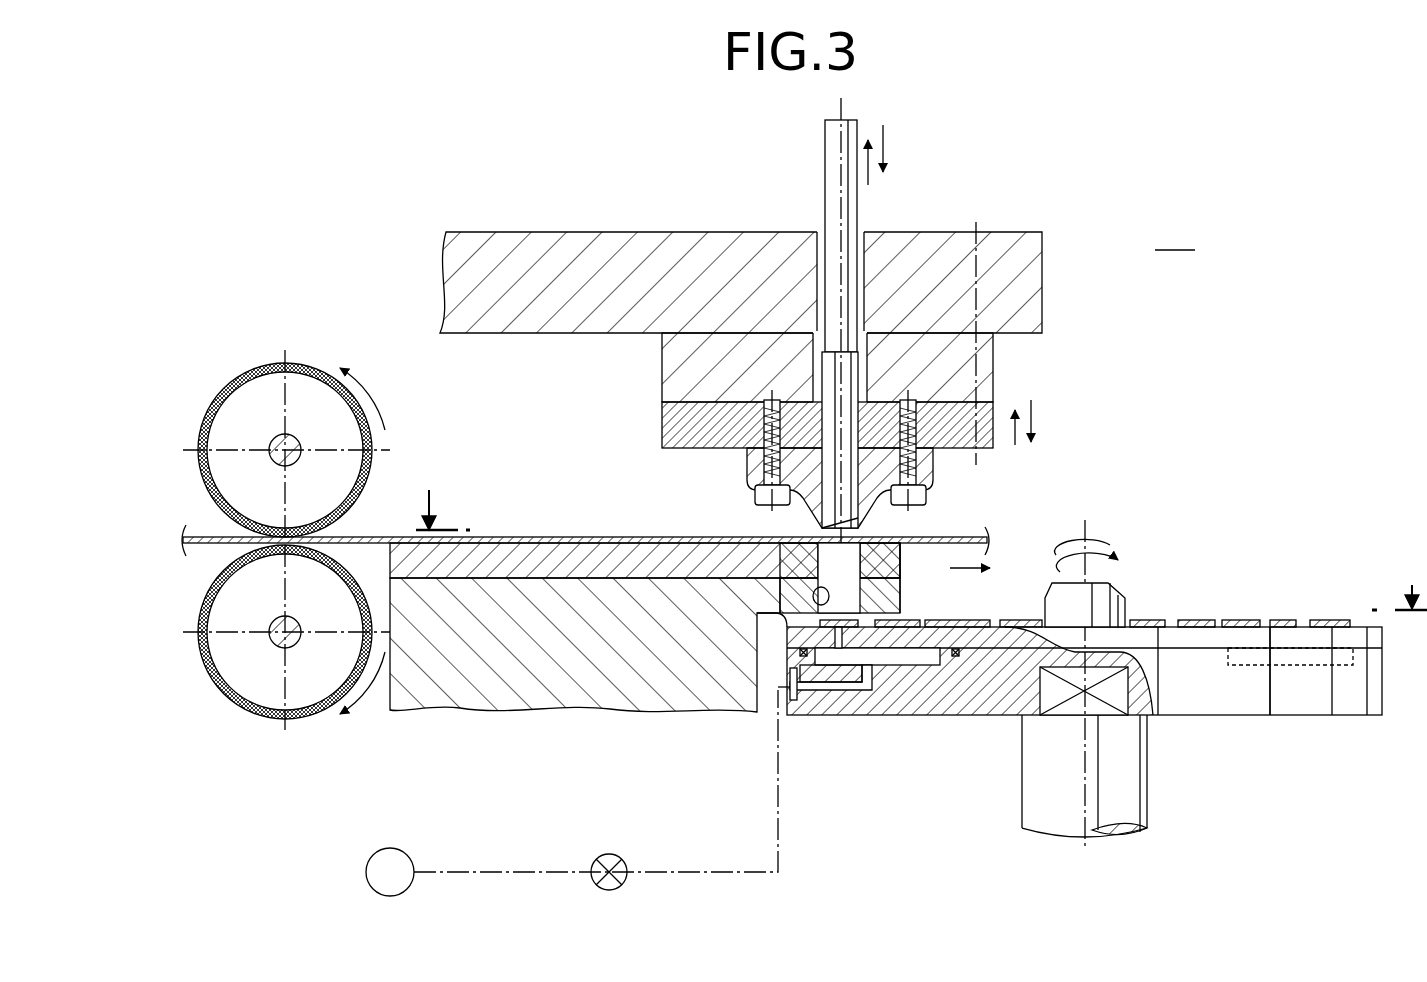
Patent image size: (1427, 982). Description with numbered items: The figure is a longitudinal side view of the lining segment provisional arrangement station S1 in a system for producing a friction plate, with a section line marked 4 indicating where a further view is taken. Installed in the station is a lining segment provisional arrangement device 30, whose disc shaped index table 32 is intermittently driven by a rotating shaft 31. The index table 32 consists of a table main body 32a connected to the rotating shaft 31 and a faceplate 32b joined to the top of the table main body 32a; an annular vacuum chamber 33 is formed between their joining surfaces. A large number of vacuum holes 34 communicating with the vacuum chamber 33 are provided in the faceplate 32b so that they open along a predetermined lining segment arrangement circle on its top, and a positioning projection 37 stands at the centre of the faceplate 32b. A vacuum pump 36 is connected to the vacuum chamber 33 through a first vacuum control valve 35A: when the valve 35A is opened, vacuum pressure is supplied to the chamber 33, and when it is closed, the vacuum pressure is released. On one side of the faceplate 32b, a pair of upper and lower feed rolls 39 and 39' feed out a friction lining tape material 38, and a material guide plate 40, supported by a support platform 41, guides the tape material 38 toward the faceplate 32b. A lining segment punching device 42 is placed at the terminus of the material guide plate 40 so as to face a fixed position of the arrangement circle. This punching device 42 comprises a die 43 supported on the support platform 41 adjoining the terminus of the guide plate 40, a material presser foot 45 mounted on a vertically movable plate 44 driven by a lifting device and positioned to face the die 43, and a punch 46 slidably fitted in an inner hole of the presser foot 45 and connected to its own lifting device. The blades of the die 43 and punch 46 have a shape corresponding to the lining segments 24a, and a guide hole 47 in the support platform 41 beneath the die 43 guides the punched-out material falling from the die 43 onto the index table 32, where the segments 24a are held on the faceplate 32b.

The lining segment 24a is at (1330, 620).
The lining segment provisional arrangement device 30 is at (1050, 643).
The rotating shaft 31 is at (1128, 782).
The index table 32 is at (1107, 730).
The table main body 32a is at (1300, 705).
The faceplate 32b is at (1375, 640).
The vacuum chamber 33 is at (908, 662).
The vacuum holes 34 is at (838, 648).
The first vacuum control valve 35A is at (606, 854).
The vacuum pump 36 is at (382, 849).
The positioning projection 37 is at (1118, 592).
The friction lining tape material 38 is at (563, 537).
The upper feed roll 39 is at (286, 418).
The lower feed roll 39' is at (286, 671).
The material guide plate 40 is at (530, 566).
The support platform 41 is at (497, 690).
The lining segment punching device 42 is at (660, 500).
The die 43 is at (903, 562).
The vertically movable plate 44 is at (593, 232).
The material presser foot 45 is at (933, 473).
The punch 46 is at (832, 375).
The guide hole 47 is at (812, 594).
The lining segment provisional arrangement station S1 is at (1175, 233).
The section line 4 is at (921, 523).